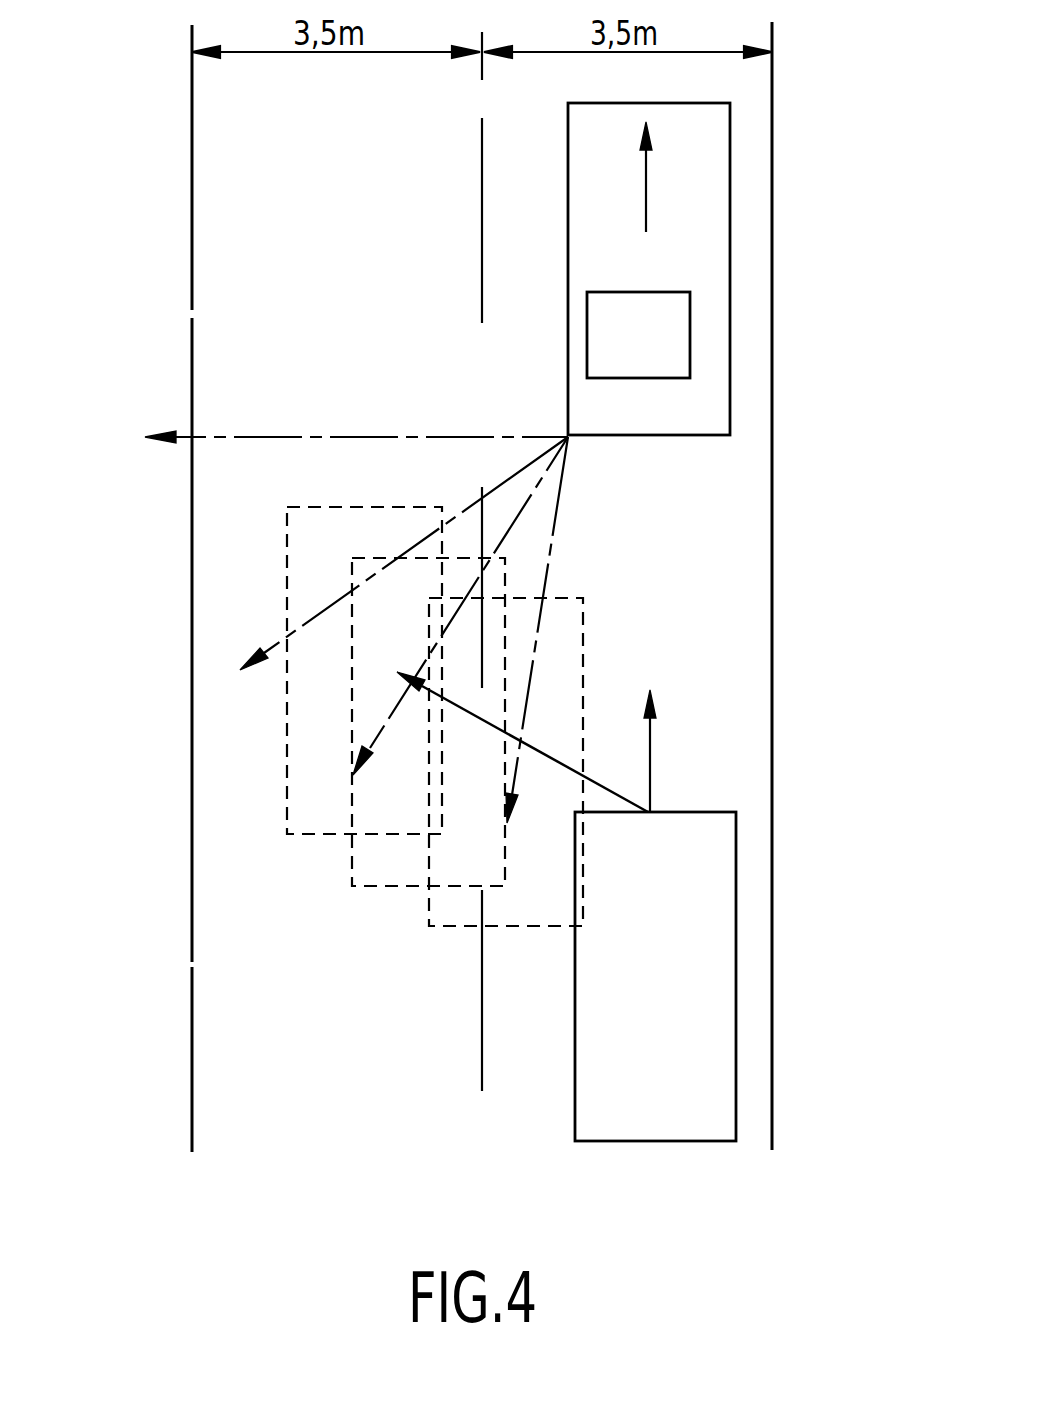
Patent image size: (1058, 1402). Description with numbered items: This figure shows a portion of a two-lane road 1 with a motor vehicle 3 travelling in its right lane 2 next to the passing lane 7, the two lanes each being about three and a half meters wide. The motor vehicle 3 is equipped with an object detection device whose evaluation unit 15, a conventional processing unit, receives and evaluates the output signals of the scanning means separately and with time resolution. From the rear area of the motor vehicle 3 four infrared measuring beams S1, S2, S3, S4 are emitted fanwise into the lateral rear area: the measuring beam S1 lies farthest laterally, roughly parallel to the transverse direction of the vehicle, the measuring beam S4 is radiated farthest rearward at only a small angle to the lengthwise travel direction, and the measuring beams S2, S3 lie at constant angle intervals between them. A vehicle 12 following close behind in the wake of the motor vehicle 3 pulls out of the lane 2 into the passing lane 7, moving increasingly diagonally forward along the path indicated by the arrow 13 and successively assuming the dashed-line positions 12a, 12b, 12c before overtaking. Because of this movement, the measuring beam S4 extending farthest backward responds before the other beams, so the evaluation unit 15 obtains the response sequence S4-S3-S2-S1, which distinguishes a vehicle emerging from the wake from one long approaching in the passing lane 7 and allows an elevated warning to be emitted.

The two-lane road 1 is at (773, 527).
The right lane 2 is at (684, 545).
The passing lane 7 is at (365, 327).
The motor vehicle 3 is at (730, 248).
The evaluation unit 15 is at (690, 335).
The measuring beam S1 is at (368, 437).
The measuring beam S2 is at (478, 510).
The measuring beam S3 is at (505, 541).
The measuring beam S4 is at (548, 582).
The vehicle 12 is at (736, 1025).
The position of vehicle 12a is at (451, 927).
The position of vehicle 12b is at (390, 886).
The position of vehicle 12c is at (318, 835).
The movement vector 13 is at (467, 712).